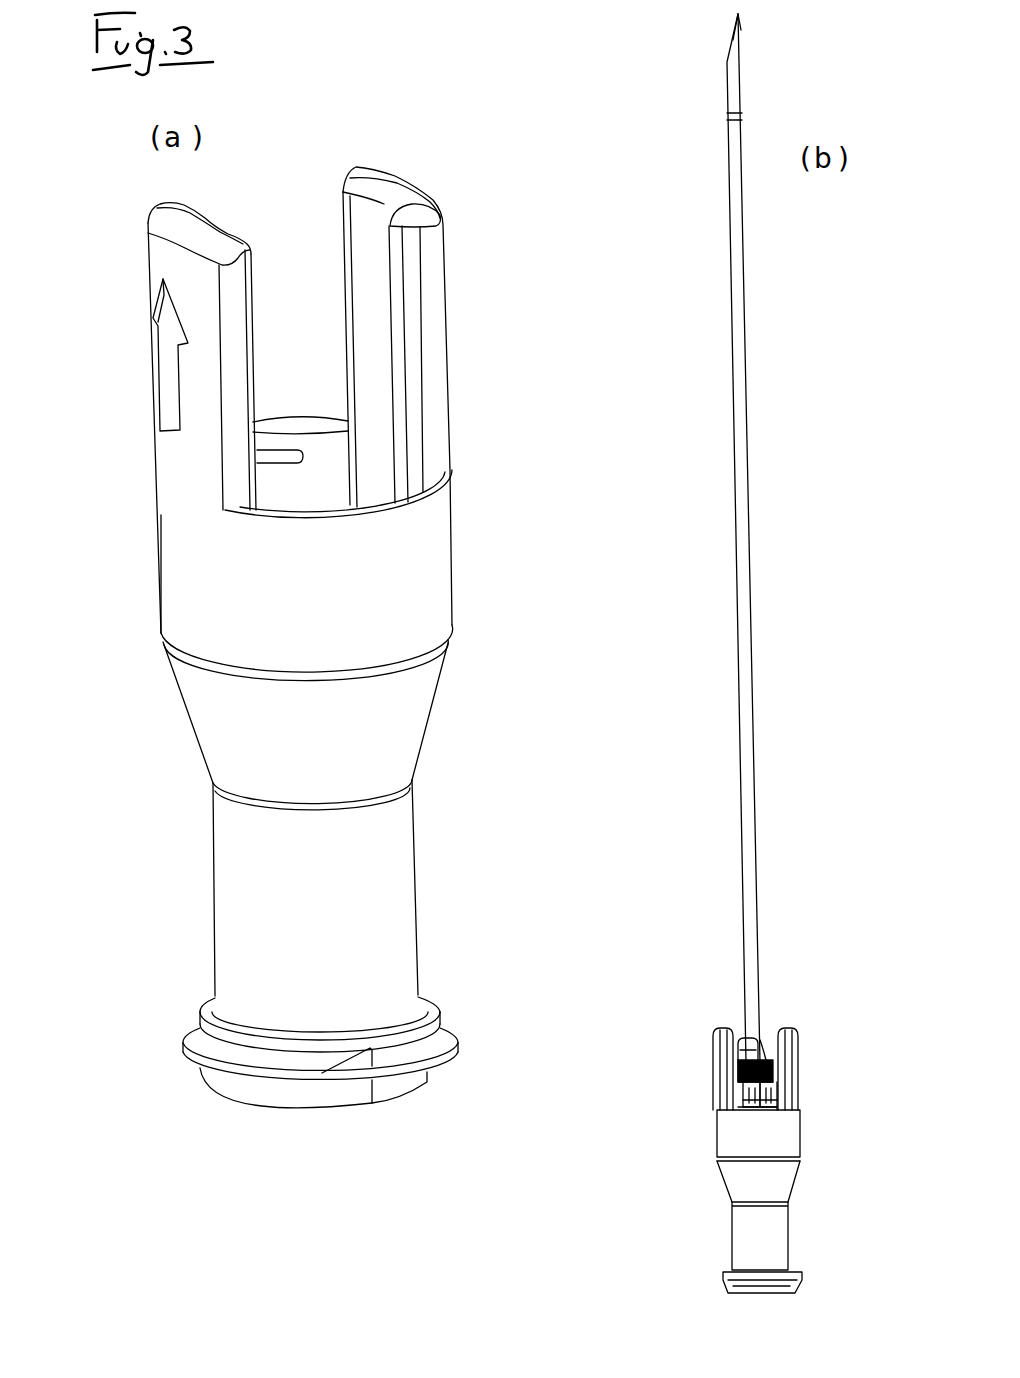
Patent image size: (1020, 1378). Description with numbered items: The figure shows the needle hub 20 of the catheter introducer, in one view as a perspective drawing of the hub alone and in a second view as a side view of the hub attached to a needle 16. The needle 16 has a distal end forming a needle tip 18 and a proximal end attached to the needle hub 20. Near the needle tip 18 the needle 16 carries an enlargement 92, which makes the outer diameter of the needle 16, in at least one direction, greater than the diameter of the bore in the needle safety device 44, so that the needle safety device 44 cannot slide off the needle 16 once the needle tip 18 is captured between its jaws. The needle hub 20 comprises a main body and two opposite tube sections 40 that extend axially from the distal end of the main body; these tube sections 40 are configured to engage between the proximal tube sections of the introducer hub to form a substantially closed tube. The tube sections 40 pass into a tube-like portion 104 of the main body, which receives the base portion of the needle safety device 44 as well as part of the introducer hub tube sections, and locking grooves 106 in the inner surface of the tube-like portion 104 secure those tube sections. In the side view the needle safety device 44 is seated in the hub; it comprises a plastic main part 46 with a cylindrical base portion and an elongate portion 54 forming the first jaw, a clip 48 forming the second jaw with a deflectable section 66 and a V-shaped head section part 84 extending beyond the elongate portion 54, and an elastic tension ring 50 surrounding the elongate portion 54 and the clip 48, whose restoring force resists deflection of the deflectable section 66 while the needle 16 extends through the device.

The needle 16 is at (733, 462).
The needle tip 18 is at (737, 13).
The enlargement 92 is at (723, 118).
The needle hub 20 is at (160, 640).
The tube sections 40 is at (150, 370).
The tube-like portion 104 is at (423, 568).
The locking grooves 106 is at (272, 457).
The deflectable section 66 is at (750, 1047).
The head section part 84 is at (763, 1043).
The tension ring 50 is at (773, 1070).
The needle safety device 44 is at (740, 1067).
The elongate portion 54 is at (747, 1093).
The clip 48 is at (773, 1087).
The main part 46 is at (747, 1103).